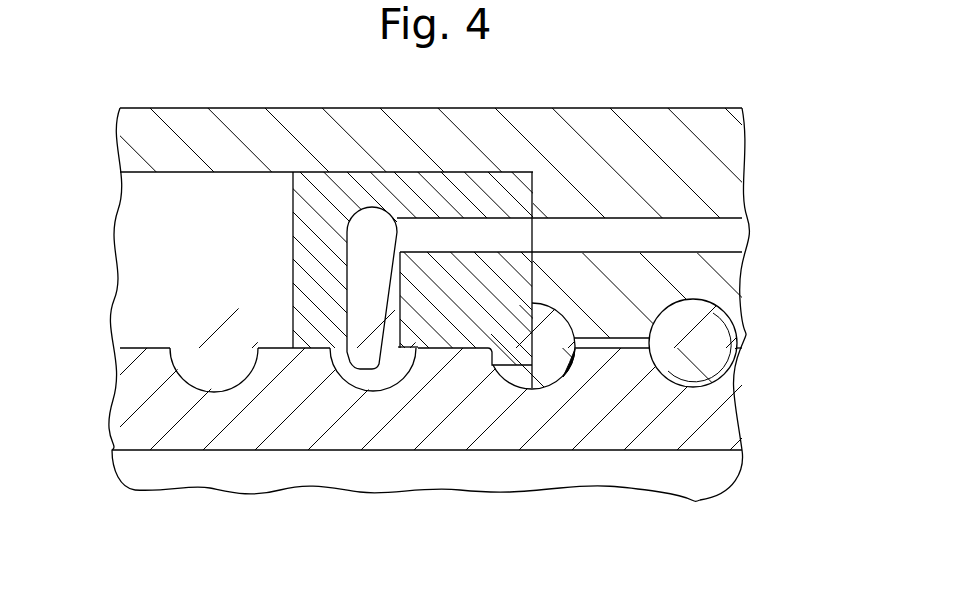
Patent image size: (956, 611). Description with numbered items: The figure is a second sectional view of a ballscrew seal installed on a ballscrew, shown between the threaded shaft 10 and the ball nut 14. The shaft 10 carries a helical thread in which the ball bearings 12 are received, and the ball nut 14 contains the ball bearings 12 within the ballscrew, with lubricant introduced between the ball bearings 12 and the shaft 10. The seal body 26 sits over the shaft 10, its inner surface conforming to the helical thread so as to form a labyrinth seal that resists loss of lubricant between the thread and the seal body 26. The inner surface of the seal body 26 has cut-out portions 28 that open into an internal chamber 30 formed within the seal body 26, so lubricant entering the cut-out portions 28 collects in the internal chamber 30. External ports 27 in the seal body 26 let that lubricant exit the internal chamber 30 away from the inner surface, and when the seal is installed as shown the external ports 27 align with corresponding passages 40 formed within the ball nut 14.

The threaded shaft 10 is at (165, 410).
The ball bearings 12 is at (712, 352).
The ball nut 14 is at (160, 142).
The seal body 26 is at (318, 212).
The external ports 27 is at (535, 236).
The cut-out portions 28 is at (367, 369).
The internal chamber 30 is at (368, 272).
The passages 40 is at (720, 233).